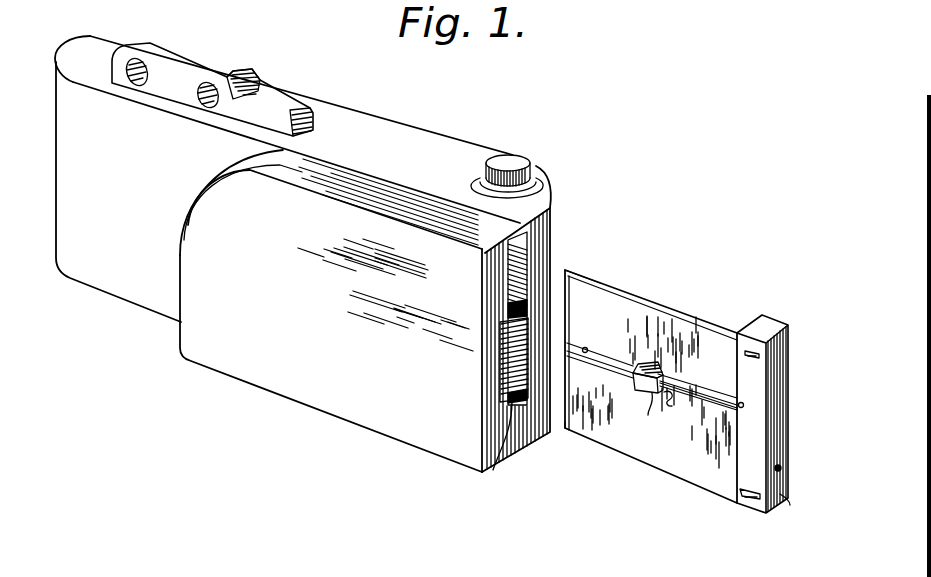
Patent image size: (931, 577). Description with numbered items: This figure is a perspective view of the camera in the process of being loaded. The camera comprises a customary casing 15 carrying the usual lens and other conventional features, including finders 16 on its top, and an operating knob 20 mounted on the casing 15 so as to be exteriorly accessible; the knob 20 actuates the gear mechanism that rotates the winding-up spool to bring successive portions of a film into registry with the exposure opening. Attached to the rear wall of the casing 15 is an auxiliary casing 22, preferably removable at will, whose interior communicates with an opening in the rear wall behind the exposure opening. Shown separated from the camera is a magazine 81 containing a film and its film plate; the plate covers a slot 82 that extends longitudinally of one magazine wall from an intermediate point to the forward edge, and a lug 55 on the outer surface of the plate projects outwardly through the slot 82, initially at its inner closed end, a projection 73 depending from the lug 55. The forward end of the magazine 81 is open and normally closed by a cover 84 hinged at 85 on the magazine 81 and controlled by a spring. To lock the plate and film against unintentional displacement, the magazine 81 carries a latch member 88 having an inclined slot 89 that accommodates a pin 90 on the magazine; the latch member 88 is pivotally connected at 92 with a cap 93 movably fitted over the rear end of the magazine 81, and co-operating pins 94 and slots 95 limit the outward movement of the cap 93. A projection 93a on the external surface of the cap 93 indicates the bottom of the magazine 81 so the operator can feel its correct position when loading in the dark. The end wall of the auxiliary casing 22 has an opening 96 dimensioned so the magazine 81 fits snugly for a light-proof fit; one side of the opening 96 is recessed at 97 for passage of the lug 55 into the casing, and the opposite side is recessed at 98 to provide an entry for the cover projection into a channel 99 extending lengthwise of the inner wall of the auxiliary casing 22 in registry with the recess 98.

The casing 15 is at (360, 122).
The finders 16 is at (199, 102).
The operating knob 20 is at (517, 155).
The auxiliary casing 22 is at (180, 254).
The lug 55 is at (649, 410).
The projection 73 is at (669, 406).
The magazine 81 is at (679, 297).
The slot 82 is at (594, 340).
The cover 84 is at (565, 428).
The hinge 85 is at (589, 257).
The latch member 88 is at (697, 388).
The inclined slot 89 is at (648, 377).
The pin 90 is at (642, 363).
The pivotal connection 92 is at (754, 393).
The cap 93 is at (762, 414).
The projection 93a is at (787, 497).
The pins 94 is at (753, 320).
The slots 95 is at (757, 350).
The opening 96 is at (508, 444).
The recess 97 is at (506, 334).
The recess 98 is at (527, 313).
The channel 99 is at (521, 282).